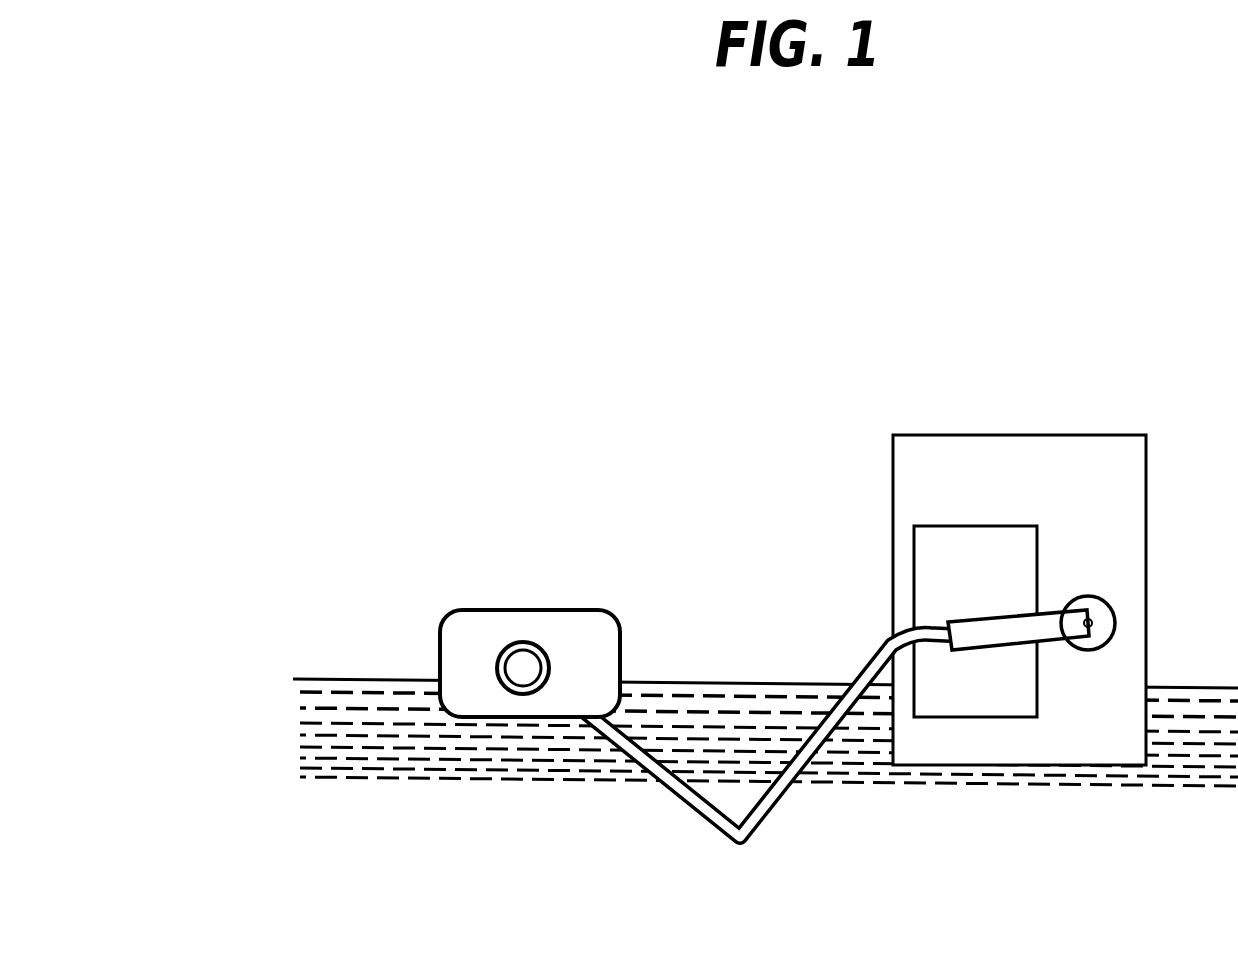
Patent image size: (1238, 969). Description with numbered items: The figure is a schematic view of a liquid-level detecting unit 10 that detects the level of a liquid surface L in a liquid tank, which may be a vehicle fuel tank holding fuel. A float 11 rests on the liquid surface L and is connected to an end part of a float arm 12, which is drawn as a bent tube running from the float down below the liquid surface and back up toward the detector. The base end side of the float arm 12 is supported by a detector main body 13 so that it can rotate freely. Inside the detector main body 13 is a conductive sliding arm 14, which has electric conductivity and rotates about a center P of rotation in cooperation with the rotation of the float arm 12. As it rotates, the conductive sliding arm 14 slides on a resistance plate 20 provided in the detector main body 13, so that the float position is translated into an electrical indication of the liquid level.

The liquid-level detecting unit 10 is at (364, 360).
The float 11 is at (490, 625).
The float arm 12 is at (698, 817).
The detector main body 13 is at (910, 433).
The conductive sliding arm 14 is at (997, 620).
The resistance plate 20 is at (958, 552).
The liquid surface L is at (366, 685).
The center of rotation P is at (1100, 604).